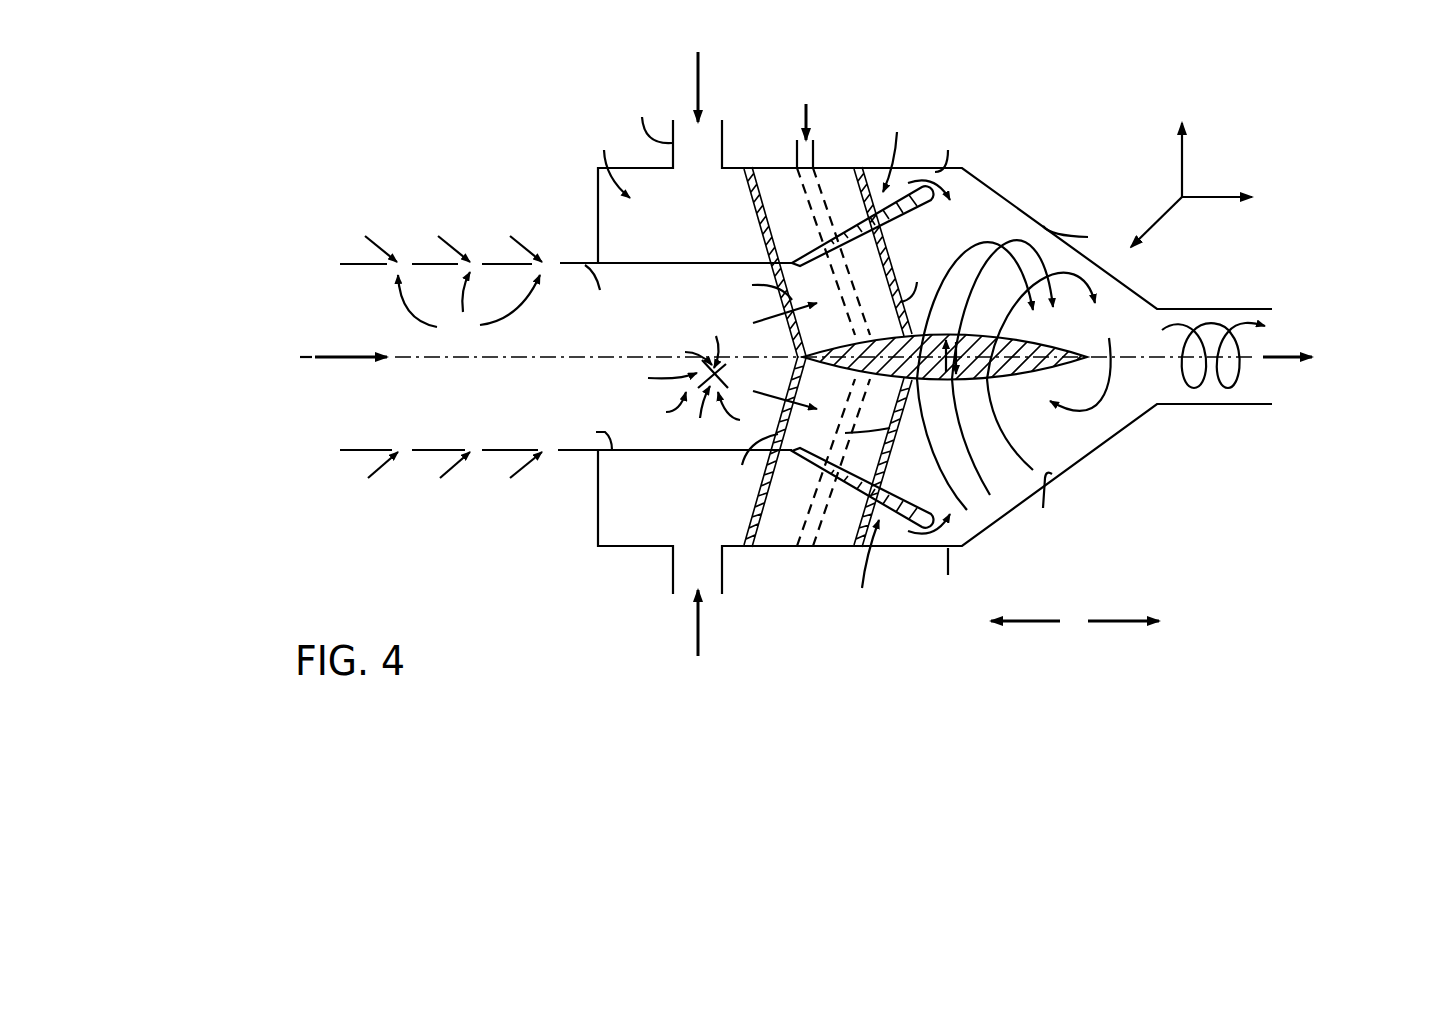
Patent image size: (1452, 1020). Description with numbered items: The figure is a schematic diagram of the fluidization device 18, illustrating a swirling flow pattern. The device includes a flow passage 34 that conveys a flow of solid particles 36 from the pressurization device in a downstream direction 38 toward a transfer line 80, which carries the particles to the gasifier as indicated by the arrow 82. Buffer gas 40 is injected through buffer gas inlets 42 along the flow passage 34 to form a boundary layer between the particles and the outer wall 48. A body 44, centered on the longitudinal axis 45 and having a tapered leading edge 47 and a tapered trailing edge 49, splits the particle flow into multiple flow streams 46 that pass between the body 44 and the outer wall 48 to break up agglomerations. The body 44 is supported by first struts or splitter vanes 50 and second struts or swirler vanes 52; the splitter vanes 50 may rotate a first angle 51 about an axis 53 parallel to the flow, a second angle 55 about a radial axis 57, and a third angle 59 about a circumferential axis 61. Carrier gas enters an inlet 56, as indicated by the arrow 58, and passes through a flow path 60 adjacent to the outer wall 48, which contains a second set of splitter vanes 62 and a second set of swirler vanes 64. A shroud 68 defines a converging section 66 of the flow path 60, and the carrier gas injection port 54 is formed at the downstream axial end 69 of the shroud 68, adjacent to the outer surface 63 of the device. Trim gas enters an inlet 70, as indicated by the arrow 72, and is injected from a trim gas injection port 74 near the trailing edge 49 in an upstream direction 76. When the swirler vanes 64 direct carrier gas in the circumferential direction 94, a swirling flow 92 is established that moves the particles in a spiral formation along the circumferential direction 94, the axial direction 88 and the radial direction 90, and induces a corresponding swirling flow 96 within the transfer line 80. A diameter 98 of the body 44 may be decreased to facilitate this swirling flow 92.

The fluidization device 18 is at (1010, 157).
The flow passage 34 is at (580, 266).
The flow of solid particles 36 is at (350, 357).
The downstream direction 38 is at (1118, 622).
The buffer gas 40 is at (445, 245).
The buffer gas inlets 42 is at (469, 306).
The body 44 is at (880, 385).
The longitudinal axis 45 is at (1243, 362).
The flow streams 46 is at (803, 318).
The tapered leading edge 47 is at (801, 356).
The outer wall 48 is at (593, 357).
The tapered trailing edge 49 is at (1111, 365).
The first struts or splitter vanes 50 is at (756, 382).
The first angle 51 is at (732, 397).
The second struts or swirler vanes 52 is at (871, 351).
The axis 53 is at (700, 415).
The carrier gas injection port 54 is at (947, 362).
The second angle 55 is at (715, 337).
The inlet 56 is at (649, 115).
The radial axis 57 is at (690, 341).
The arrow (carrier gas flow) 58 is at (697, 80).
The third angle 59 is at (657, 379).
The flow path 60 is at (609, 159).
The circumferential axis 61 is at (661, 409).
The second set of first struts or splitter vanes 62 is at (760, 182).
The outer surface 63 is at (1072, 380).
The second set of second struts or swirler vanes 64 is at (862, 185).
The converging section 66 is at (879, 360).
The shroud 68 is at (893, 230).
The downstream axial end 69 is at (938, 200).
The inlet (trim gas) 70 is at (797, 152).
The arrow (trim gas flow) 72 is at (806, 106).
The trim gas injection port 74 is at (1068, 338).
The upstream direction 76 is at (1022, 622).
The transfer line 80 is at (1220, 311).
The arrow (flow to gasifier) 82 is at (1283, 355).
The axial direction 88 is at (1213, 197).
The radial direction 90 is at (1180, 166).
The swirling flow 92 is at (988, 278).
The circumferential direction 94 is at (1160, 216).
The swirling flow (transfer line) 96 is at (1213, 345).
The diameter 98 is at (973, 380).